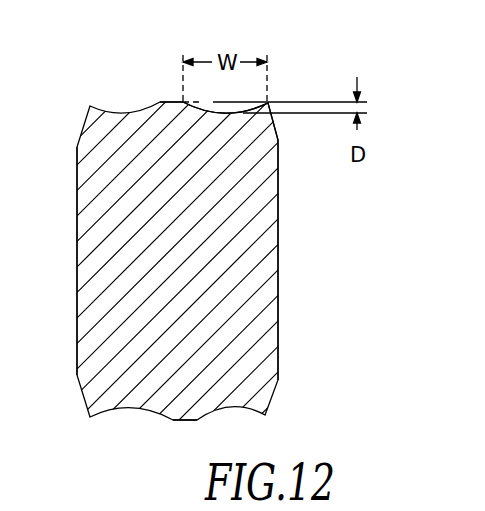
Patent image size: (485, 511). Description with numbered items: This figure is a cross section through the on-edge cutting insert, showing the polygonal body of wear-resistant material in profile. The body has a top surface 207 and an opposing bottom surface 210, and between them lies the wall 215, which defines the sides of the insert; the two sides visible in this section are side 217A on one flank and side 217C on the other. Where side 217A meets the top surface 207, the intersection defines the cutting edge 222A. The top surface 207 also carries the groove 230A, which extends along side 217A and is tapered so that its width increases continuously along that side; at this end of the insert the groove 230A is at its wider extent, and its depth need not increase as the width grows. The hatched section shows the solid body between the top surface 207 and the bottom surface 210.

The top surface 207 is at (166, 101).
The groove 230A is at (237, 112).
The cutting edge 222A is at (268, 103).
The side 217A is at (281, 223).
The side 217C is at (77, 228).
The wall 215 is at (281, 305).
The bottom surface 210 is at (183, 422).